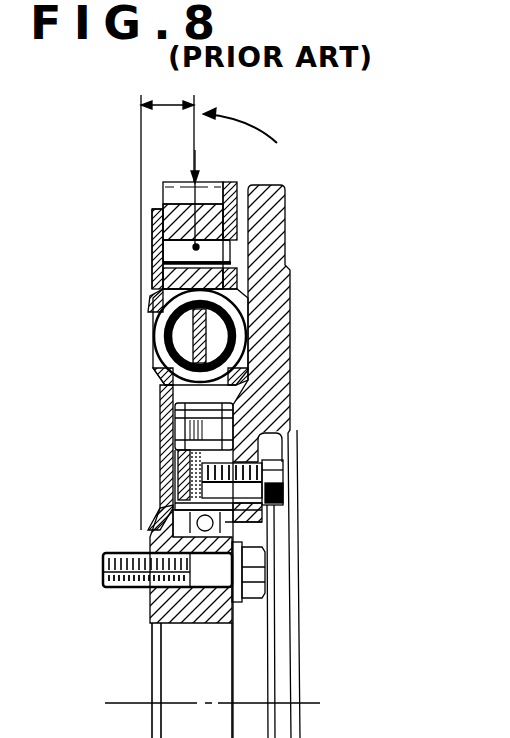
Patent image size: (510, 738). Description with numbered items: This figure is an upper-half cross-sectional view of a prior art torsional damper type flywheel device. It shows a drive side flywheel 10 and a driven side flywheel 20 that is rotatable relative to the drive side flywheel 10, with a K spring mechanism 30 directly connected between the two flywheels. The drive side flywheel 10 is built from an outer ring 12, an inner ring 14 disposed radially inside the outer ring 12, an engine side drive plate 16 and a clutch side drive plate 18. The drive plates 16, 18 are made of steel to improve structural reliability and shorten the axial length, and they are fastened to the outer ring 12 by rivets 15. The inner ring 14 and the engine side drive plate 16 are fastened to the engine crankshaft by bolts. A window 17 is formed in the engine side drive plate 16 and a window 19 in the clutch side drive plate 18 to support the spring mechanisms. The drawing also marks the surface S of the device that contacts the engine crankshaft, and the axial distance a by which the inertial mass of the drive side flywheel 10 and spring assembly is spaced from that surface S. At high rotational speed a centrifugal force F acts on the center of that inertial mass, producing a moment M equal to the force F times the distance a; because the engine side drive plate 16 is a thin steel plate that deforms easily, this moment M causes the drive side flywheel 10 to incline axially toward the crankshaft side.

The drive side flywheel 10 is at (163, 193).
The outer ring 12 is at (180, 220).
The inner ring 14 is at (178, 606).
The rivets 15 is at (175, 250).
The engine side drive plate 16 is at (165, 402).
The window 17 is at (153, 310).
The clutch side drive plate 18 is at (238, 220).
The window 19 is at (247, 307).
The driven side flywheel 20 is at (290, 186).
The K spring mechanism 30 is at (244, 342).
The distance a is at (167, 302).
The centrifugal force F is at (192, 180).
The moment M is at (245, 116).
The surface S is at (133, 535).